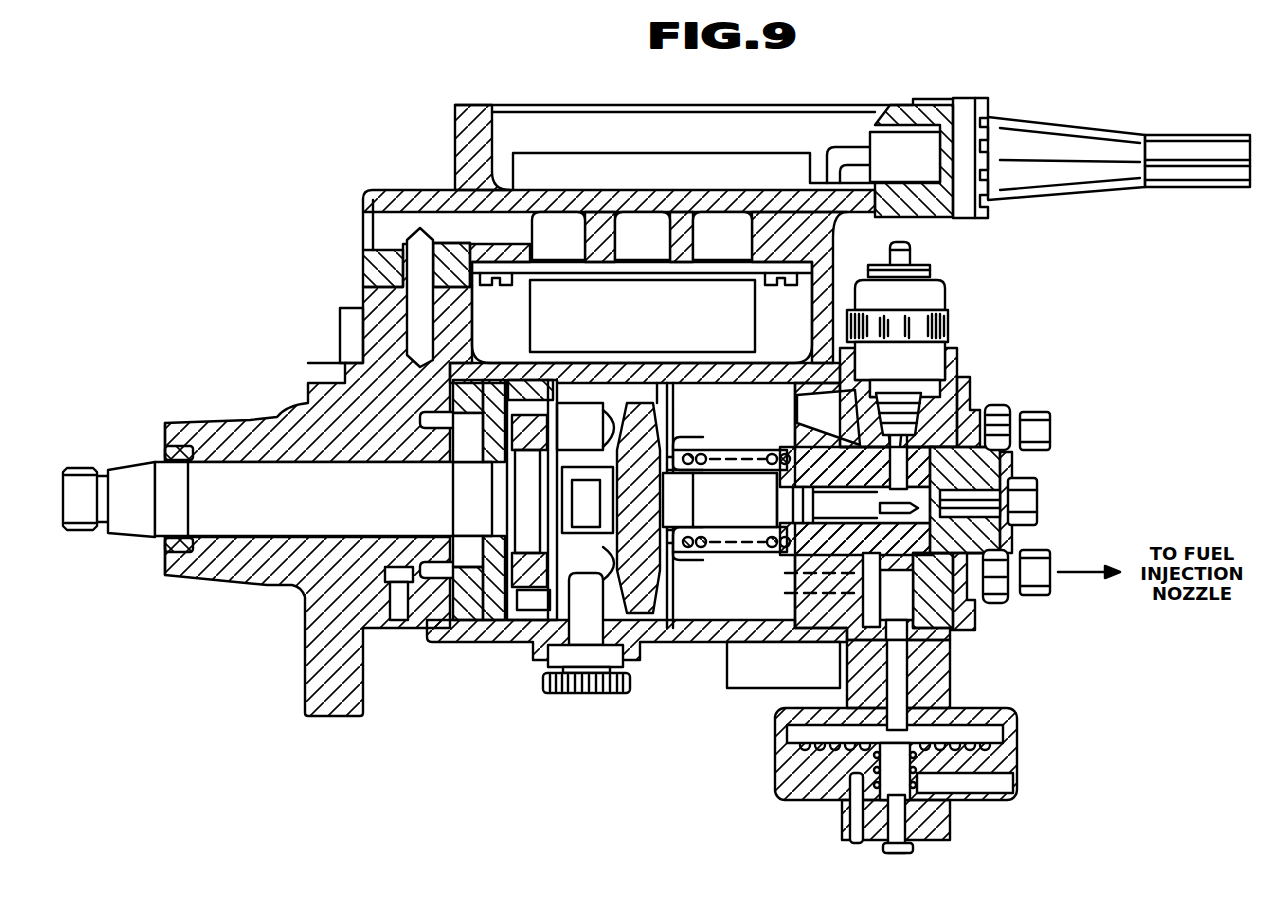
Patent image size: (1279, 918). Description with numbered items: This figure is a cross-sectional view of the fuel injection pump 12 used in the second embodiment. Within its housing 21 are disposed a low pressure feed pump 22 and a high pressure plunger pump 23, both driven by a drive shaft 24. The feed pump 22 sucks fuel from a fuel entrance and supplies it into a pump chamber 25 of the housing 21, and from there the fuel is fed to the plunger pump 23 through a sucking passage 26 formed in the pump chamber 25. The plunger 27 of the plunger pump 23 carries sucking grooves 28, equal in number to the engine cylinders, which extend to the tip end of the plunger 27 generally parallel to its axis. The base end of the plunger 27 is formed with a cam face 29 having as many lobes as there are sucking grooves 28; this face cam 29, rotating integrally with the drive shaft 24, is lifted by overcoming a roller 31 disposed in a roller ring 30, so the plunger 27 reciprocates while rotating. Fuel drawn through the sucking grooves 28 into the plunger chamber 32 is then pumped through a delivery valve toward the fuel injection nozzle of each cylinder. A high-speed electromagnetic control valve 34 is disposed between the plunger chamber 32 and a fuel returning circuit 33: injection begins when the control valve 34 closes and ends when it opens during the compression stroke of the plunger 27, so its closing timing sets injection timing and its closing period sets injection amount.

The fuel injection pump 12 is at (441, 176).
The housing 21 is at (287, 585).
The low pressure feed pump 22 is at (472, 570).
The high pressure plunger pump 23 is at (910, 493).
The drive shaft 24 is at (230, 520).
The pump chamber 25 is at (706, 607).
The sucking passage 26 is at (850, 412).
The plunger 27 is at (880, 430).
The sucking grooves 28 is at (903, 508).
The cam face 29 is at (636, 592).
The roller ring 30 is at (553, 615).
The roller 31 is at (608, 592).
The plunger chamber 32 is at (945, 488).
The fuel returning circuit 33 is at (883, 583).
The electromagnetic control valve 34 is at (998, 785).